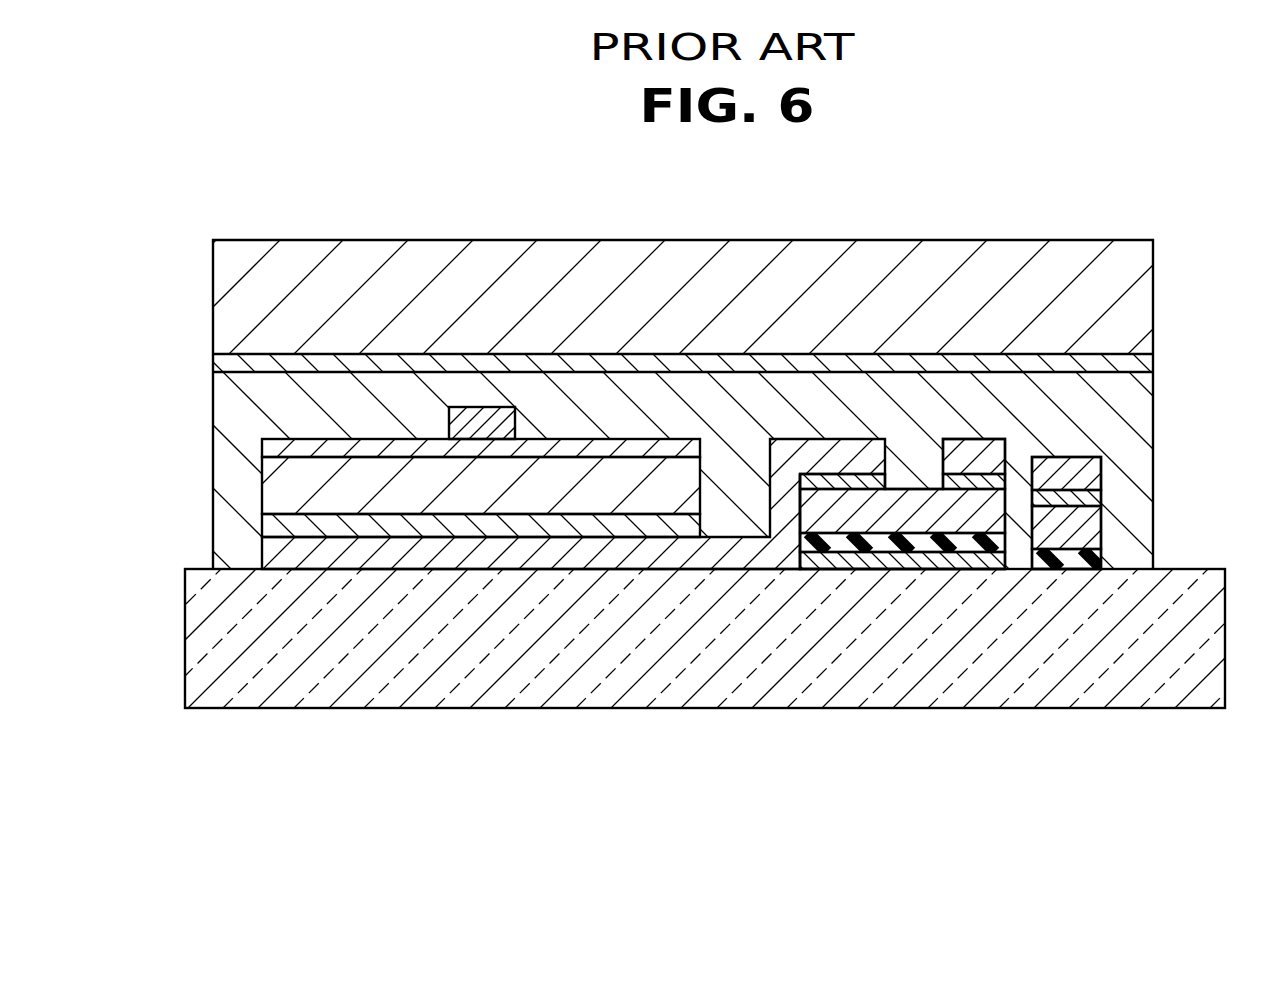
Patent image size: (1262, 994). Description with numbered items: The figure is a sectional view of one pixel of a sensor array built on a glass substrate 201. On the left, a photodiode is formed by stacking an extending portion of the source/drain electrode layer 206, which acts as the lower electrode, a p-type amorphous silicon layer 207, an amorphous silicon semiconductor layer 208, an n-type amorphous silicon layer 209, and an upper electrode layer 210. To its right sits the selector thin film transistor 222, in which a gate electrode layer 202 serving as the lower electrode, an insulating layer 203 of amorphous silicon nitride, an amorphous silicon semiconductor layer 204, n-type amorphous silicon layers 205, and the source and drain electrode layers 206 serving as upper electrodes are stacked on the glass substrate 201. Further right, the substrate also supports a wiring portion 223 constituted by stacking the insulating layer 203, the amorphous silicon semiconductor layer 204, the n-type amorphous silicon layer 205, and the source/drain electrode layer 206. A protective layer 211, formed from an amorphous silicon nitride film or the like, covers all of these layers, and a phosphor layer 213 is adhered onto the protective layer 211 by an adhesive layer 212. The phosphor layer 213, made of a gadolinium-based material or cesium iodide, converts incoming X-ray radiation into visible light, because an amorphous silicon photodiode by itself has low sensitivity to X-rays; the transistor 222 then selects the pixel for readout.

The glass substrate 201 is at (320, 690).
The gate electrode layer 202 is at (924, 558).
The insulating layer 203 is at (808, 548).
The amorphous silicon semiconductor layer 204 is at (805, 505).
The n-type amorphous silicon layers 205 is at (850, 482).
The source and drain electrode layers 206 is at (272, 550).
The p-type amorphous silicon layer 207 is at (272, 520).
The amorphous silicon semiconductor layer 208 is at (272, 480).
The n-type amorphous silicon layer 209 is at (262, 445).
The upper electrode layer 210 is at (484, 407).
The protective layer 211 is at (235, 402).
The adhesive layer 212 is at (230, 362).
The phosphor layer 213 is at (694, 253).
The selector thin film transistor 222 is at (898, 594).
The wiring portion 223 is at (1070, 594).